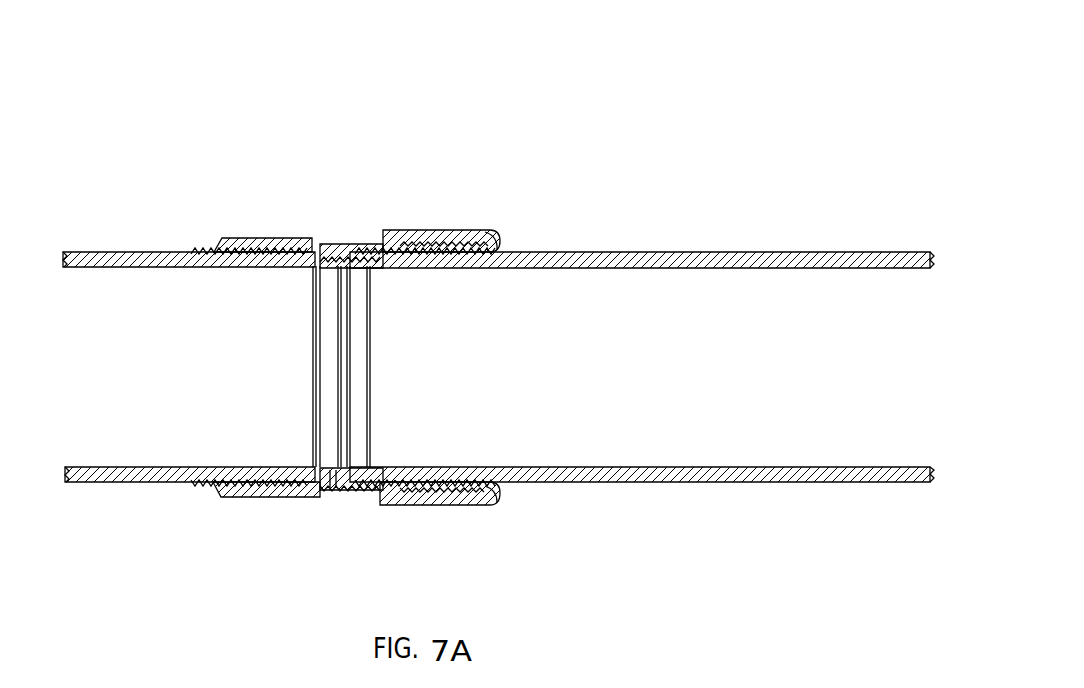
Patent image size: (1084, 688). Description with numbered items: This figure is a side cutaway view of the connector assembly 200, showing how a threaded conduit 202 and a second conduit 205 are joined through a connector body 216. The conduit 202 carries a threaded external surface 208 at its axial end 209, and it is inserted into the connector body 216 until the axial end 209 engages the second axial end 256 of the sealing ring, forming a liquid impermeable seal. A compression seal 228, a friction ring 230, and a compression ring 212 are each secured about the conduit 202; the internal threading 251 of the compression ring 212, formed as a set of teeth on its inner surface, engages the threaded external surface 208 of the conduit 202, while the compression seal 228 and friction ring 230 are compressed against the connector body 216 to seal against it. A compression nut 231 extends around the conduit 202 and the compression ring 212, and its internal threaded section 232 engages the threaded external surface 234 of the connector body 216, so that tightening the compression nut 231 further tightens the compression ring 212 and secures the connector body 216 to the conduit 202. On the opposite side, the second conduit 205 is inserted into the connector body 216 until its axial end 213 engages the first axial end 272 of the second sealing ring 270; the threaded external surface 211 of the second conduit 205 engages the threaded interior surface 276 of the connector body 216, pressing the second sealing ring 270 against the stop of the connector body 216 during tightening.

The connector assembly 200 is at (457, 82).
The conduit 202 is at (712, 290).
The second conduit 205 is at (105, 296).
The threaded external surface 208 is at (395, 495).
The axial end 209 is at (366, 248).
The threaded external surface 211 is at (205, 250).
The compression ring 212 is at (490, 503).
The axial end 213 is at (317, 250).
The connector body 216 is at (290, 232).
The compression seal 228 is at (428, 237).
The friction ring 230 is at (448, 237).
The compression nut 231 is at (405, 237).
The internal threaded section 232 is at (445, 504).
The threaded external surface 234 is at (366, 495).
The internal threading 251 is at (493, 237).
The second axial end 256 is at (350, 493).
The second sealing ring 270 is at (330, 248).
The first axial end 272 is at (318, 485).
The threaded interior surface 276 is at (243, 250).